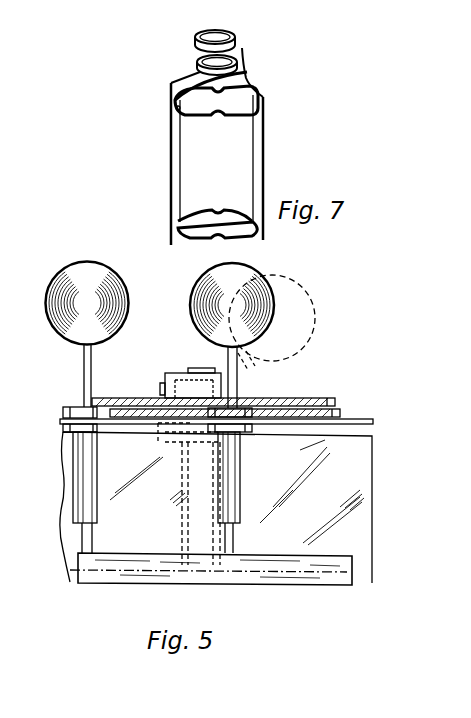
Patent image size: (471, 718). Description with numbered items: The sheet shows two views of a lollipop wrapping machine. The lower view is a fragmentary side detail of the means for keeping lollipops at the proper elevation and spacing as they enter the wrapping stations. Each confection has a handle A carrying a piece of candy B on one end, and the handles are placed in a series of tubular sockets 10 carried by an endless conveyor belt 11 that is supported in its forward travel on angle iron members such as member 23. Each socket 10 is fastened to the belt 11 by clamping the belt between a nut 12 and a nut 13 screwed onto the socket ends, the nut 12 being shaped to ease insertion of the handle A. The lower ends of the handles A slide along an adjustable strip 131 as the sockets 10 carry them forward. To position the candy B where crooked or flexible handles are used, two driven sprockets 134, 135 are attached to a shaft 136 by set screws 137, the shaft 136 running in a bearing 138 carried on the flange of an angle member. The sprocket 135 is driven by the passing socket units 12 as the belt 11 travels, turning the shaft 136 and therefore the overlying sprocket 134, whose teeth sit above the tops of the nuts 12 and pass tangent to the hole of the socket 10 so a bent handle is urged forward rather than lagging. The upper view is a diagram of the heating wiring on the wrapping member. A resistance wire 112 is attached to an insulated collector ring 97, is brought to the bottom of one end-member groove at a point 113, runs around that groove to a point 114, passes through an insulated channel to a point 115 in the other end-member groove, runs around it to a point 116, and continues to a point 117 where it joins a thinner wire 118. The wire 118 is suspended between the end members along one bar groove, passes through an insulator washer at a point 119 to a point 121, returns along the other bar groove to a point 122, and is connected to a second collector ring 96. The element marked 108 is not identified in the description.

In FIG. 7, the second insulated electrical collector ring 97 is at (198, 40).
In FIG. 7, the electrical collector ring 96 is at (199, 62).
In FIG. 7, the resistance wire 112 is at (243, 60).
In FIG. 7, the point 122 is at (172, 83).
In FIG. 7, the point 116 is at (175, 98).
In FIG. 7, the point 117 is at (247, 80).
In FIG. 7, the point 115 is at (176, 108).
In FIG. 7, the wire 118 is at (260, 182).
In FIG. 7, the point 114 is at (180, 222).
In FIG. 7, the point 113 is at (178, 227).
In FIG. 7, the point 121 is at (178, 237).
In FIG. 7, the point 119 is at (257, 238).
In FIG. 5, the piece of candy B is at (127, 292).
In FIG. 5, the handle A is at (92, 368).
In FIG. 5, the driven sprocket 134 is at (283, 398).
In FIG. 5, the driven sprocket 135 is at (338, 415).
In FIG. 5, the endless conveyor belt 11 is at (365, 420).
In FIG. 5, the nut 12 is at (70, 407).
In FIG. 5, the nut 13 is at (70, 427).
In FIG. 5, the set screw 137 is at (167, 382).
In FIG. 5, the enclosure 108 is at (0, 450).
In FIG. 5, the tubular socket 10 is at (97, 481).
In FIG. 5, the shaft 136 is at (203, 583).
In FIG. 5, the bearing 138 is at (172, 496).
In FIG. 5, the adjustable strip 131 is at (130, 568).
In FIG. 5, the angle iron member 23 is at (348, 452).